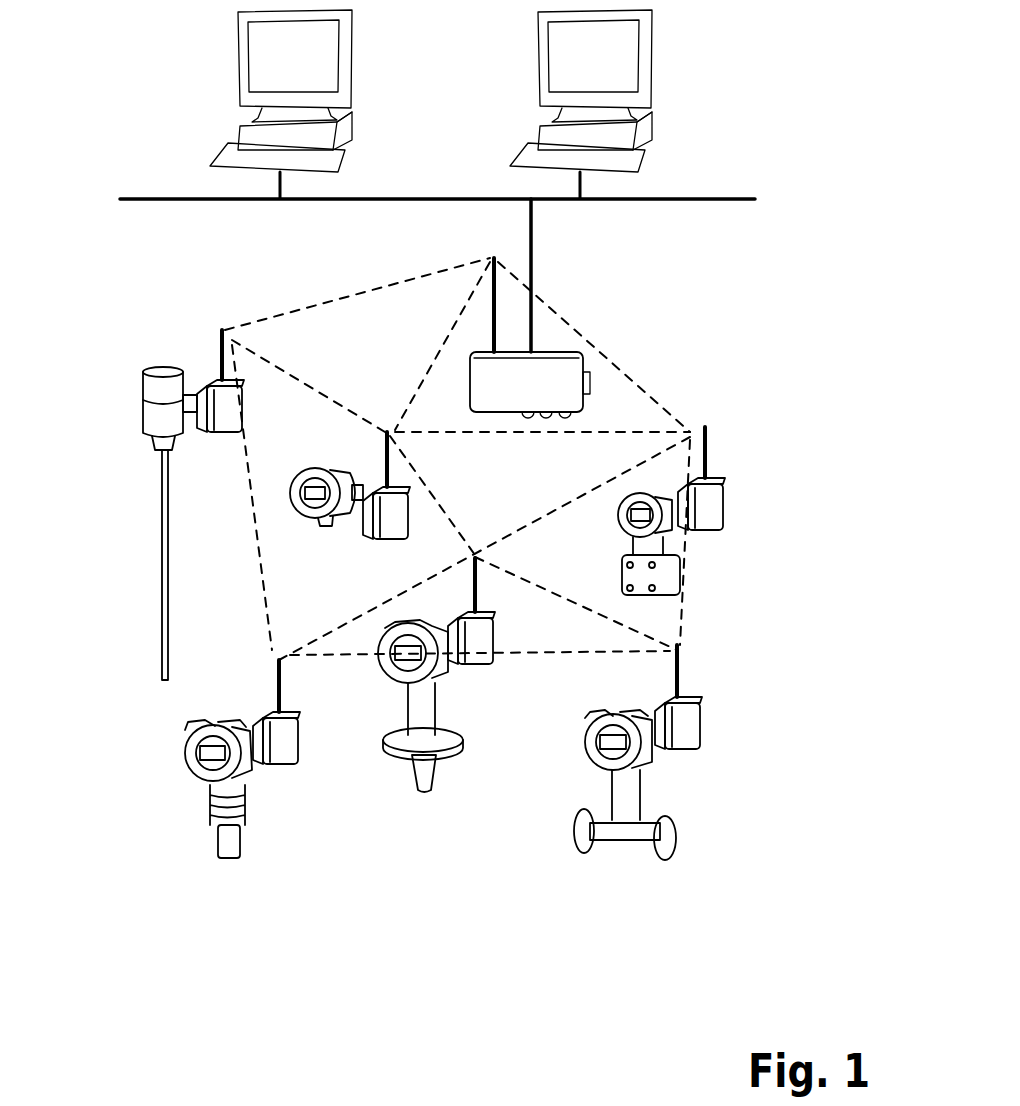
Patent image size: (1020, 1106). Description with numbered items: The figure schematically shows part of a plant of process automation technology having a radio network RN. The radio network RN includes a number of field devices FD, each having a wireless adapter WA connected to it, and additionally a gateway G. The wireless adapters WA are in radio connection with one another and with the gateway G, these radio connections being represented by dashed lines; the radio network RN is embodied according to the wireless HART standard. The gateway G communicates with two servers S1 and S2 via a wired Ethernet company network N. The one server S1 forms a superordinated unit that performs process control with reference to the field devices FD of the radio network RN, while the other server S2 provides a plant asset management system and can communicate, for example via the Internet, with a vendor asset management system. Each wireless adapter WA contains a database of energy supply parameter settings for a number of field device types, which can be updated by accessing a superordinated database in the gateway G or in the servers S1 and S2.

The server S1 is at (266, 36).
The server S2 is at (556, 40).
The company network N is at (722, 196).
The gateway G is at (548, 383).
The radio network RN is at (724, 300).
The field device FD is at (150, 405).
The wireless adapter WA is at (232, 415).